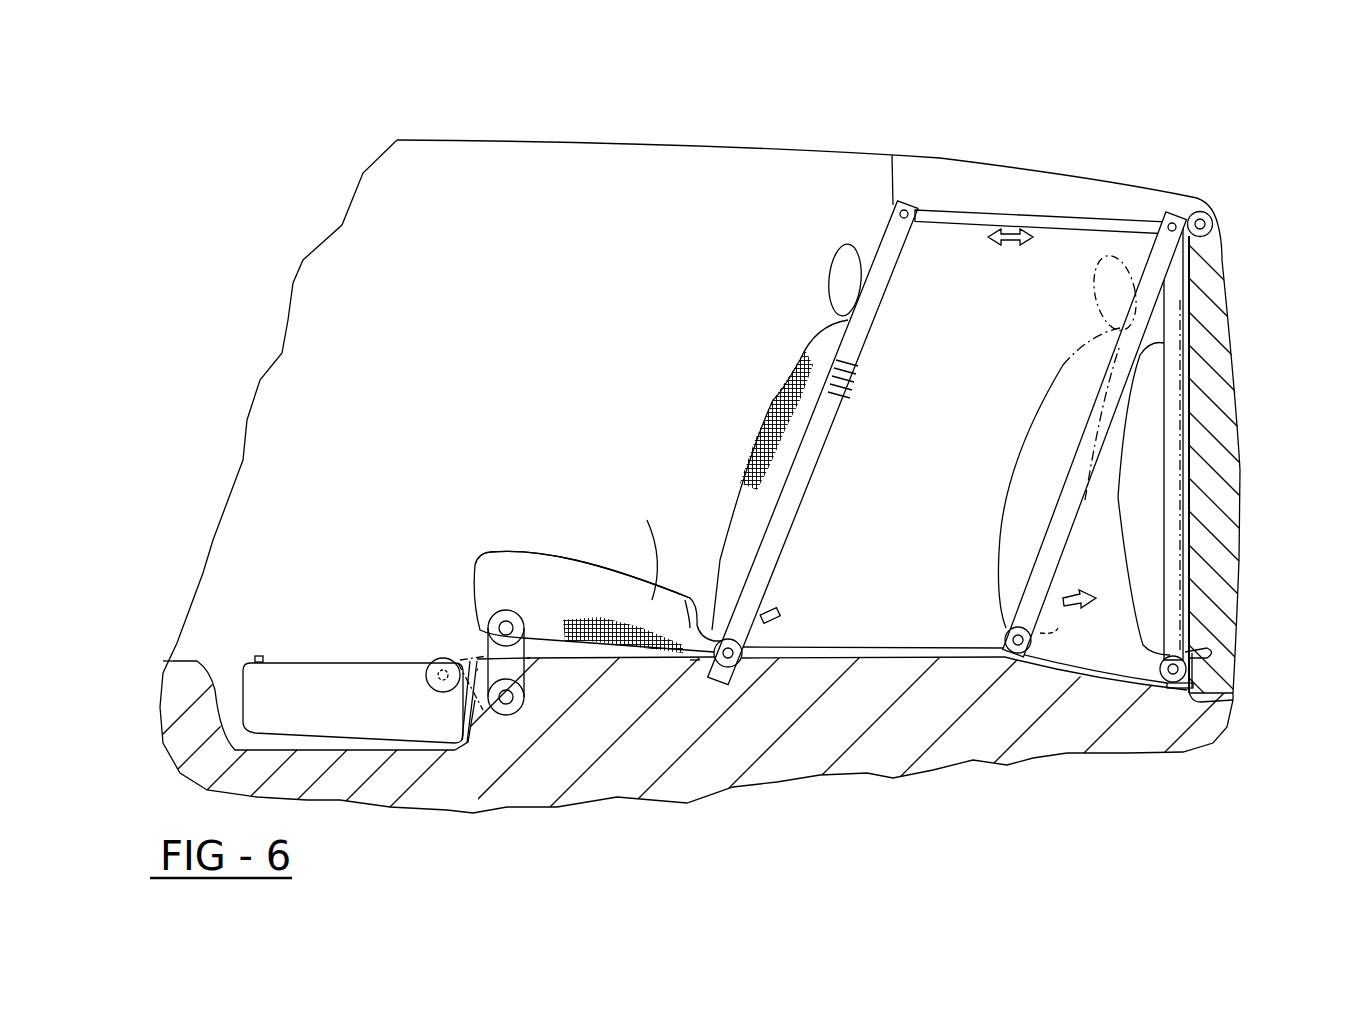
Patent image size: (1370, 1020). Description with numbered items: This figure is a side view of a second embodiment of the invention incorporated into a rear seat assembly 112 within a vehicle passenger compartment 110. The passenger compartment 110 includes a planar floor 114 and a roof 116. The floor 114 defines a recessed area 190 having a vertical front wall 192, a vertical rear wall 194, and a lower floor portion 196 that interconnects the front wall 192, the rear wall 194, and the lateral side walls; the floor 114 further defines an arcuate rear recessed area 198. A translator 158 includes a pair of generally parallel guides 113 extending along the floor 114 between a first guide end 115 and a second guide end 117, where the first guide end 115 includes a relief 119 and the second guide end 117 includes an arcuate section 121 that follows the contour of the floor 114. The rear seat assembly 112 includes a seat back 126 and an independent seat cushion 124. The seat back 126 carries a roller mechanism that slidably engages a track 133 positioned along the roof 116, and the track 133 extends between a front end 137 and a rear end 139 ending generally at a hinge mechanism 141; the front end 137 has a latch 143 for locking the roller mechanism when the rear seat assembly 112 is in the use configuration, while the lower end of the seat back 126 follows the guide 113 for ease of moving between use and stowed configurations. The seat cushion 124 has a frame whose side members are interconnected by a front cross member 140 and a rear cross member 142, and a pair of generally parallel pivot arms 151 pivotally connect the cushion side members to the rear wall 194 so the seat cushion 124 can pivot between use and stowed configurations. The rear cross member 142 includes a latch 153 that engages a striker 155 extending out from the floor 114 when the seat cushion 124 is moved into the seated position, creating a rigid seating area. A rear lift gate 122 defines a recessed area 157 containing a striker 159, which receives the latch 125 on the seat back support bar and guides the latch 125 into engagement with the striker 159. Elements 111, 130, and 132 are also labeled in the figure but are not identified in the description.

The passenger compartment 110 is at (485, 410).
The vehicle roof 111 is at (543, 140).
The rear seat assembly 112 is at (740, 452).
The guides 113 is at (850, 660).
The floor 114 is at (667, 663).
The first guide end 115 is at (750, 670).
The roof 116 is at (775, 148).
The second guide end 117 is at (1185, 700).
The relief 119 is at (733, 667).
The arcuate section 121 is at (1235, 702).
The rear lift gate 122 is at (1235, 480).
The seat cushion 124 is at (500, 553).
The latch 125 is at (797, 612).
The seat back 126 is at (813, 347).
The cushion frame 130 is at (480, 583).
The cushion edge 132 is at (655, 600).
The track 133 is at (1065, 187).
The front end 137 is at (893, 173).
The rear end 139 is at (1225, 265).
The front cross member 140 is at (472, 617).
The hinge mechanism 141 is at (1213, 222).
The rear cross member 142 is at (745, 660).
The latch 143 is at (890, 200).
The pivot arms 151 is at (488, 652).
The latch 153 is at (255, 655).
The striker 155 is at (690, 665).
The recessed area 157 is at (1212, 647).
The translator 158 is at (1037, 855).
The striker 159 is at (1215, 668).
The recessed area 190 is at (470, 758).
The vertical front wall 192 is at (173, 762).
The vertical rear wall 194 is at (473, 725).
The lower floor portion 196 is at (410, 753).
The arcuate rear recessed area 198 is at (1093, 690).